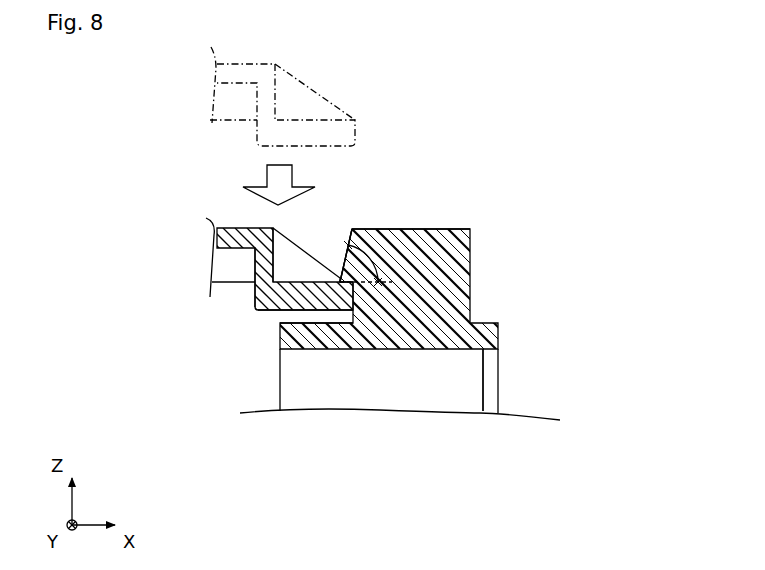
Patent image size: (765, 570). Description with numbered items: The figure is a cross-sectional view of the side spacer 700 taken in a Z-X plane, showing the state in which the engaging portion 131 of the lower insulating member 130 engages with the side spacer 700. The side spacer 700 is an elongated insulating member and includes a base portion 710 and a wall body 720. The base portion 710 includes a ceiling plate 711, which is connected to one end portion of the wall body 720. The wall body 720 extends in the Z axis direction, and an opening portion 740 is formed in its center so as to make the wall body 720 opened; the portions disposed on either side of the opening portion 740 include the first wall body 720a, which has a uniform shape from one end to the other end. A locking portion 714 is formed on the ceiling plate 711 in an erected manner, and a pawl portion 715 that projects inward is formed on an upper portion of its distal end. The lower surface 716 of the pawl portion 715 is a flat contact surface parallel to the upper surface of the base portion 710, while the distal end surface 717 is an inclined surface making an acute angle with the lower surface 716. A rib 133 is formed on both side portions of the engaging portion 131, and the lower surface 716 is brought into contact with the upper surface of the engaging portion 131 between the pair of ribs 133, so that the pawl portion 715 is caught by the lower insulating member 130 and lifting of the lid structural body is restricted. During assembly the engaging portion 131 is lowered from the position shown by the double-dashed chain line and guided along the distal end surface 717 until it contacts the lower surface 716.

The side spacer 700 is at (569, 145).
The lower insulating member 130 is at (229, 212).
The rib 133 is at (273, 270).
The lower surface 716 is at (255, 299).
The engaging portion 131 is at (270, 318).
The ceiling plate 711 is at (283, 326).
The first wall body 720a is at (295, 400).
The distal end surface 717 is at (343, 257).
The locking portion 714 is at (372, 217).
The pawl portion 715 is at (352, 243).
The base portion 710 is at (489, 267).
The wall body 720 is at (503, 367).
The opening portion 740 is at (490, 398).